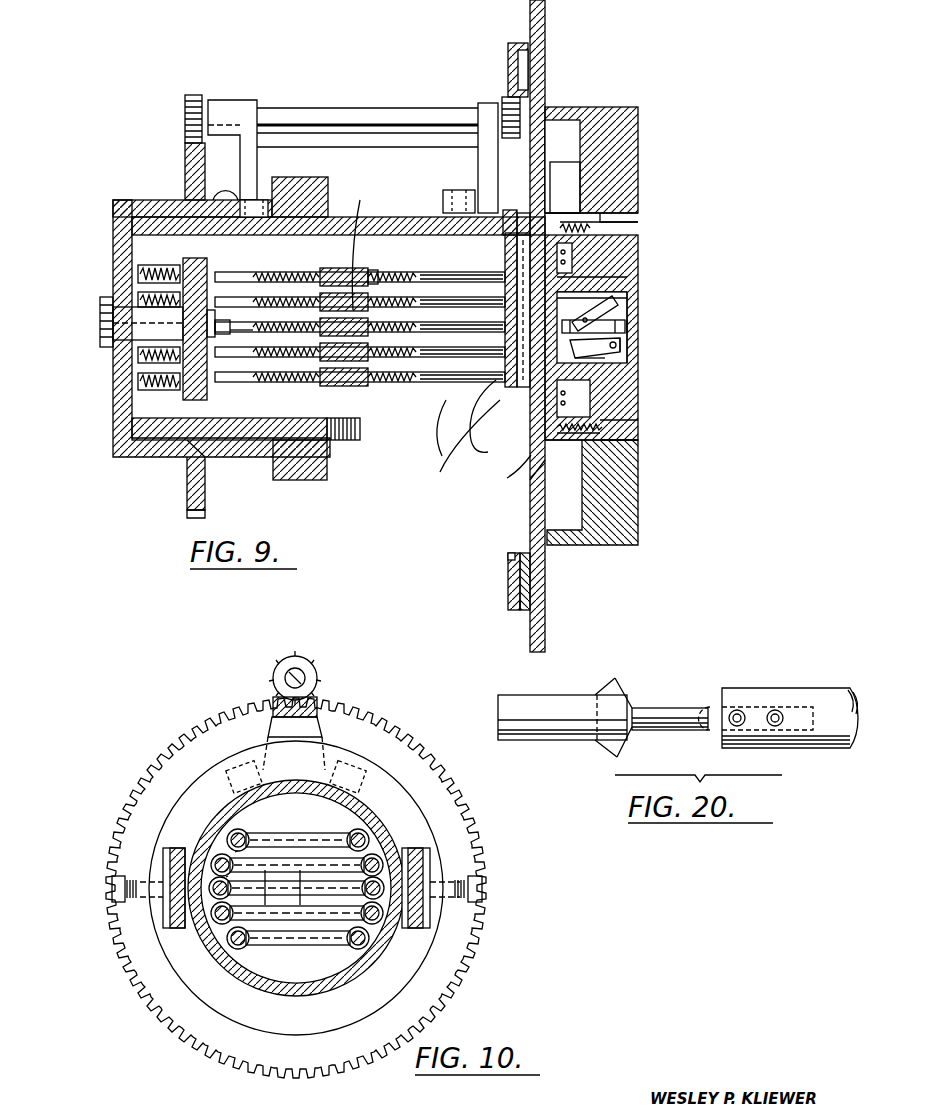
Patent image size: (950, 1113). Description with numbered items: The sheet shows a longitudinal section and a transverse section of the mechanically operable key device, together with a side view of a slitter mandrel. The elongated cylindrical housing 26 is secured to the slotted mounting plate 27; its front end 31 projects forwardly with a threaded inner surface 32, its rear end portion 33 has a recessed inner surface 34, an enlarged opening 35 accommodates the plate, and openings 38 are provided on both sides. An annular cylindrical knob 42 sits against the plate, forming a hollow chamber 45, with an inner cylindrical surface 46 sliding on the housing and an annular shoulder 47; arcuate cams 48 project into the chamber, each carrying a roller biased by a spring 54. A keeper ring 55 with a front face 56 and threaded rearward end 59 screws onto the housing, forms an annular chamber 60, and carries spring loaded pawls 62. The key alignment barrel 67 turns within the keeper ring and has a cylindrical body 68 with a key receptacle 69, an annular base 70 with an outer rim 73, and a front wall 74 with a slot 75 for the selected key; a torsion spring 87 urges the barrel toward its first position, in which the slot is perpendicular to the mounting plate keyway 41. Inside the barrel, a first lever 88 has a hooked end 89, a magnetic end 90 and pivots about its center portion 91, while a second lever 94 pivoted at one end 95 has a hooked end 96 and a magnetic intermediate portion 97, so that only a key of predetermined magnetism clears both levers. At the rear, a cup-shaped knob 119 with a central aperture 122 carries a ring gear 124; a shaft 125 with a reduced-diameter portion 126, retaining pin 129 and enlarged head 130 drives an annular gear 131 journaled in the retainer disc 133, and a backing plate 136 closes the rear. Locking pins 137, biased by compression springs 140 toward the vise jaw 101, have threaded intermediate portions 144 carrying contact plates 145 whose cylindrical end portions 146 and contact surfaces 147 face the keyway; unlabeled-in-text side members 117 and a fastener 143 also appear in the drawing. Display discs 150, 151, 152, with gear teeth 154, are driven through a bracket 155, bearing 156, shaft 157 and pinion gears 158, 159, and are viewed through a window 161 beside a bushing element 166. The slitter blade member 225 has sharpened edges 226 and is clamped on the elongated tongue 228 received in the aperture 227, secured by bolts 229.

In FIG. 9, the housing 26 is at (368, 244).
In FIG. 10, the housing 26 is at (268, 988).
In FIG. 9, the mounting plate 27 is at (546, 633).
In FIG. 9, the front end 31 is at (636, 218).
In FIG. 9, the threaded inner surface 32 is at (612, 237).
In FIG. 9, the rear end portion 33 is at (155, 200).
In FIG. 9, the recessed inner surface 34 is at (186, 449).
In FIG. 9, the enlarged opening 35 is at (378, 442).
In FIG. 9, the openings 38 is at (521, 240).
In FIG. 9, the mounting plate keyway 41 is at (508, 332).
In FIG. 9, the annular cylindrical knob 42 is at (640, 536).
In FIG. 9, the hollow chamber 45 is at (578, 521).
In FIG. 9, the inner cylindrical surface 46 is at (559, 446).
In FIG. 9, the annular shoulder 47 is at (602, 430).
In FIG. 9, the arcuate cams 48 is at (576, 184).
In FIG. 9, the spring 54 is at (551, 170).
In FIG. 9, the keeper ring 55 is at (645, 428).
In FIG. 9, the front face 56 is at (640, 420).
In FIG. 9, the threaded rearward end 59 is at (524, 479).
In FIG. 9, the annular chamber 60 is at (561, 230).
In FIG. 9, the spring loaded pawl 62 is at (630, 328).
In FIG. 9, the key alignment barrel 67 is at (645, 338).
In FIG. 9, the cylindrical body 68 is at (580, 299).
In FIG. 9, the key receptacle 69 is at (459, 445).
In FIG. 9, the annular base 70 is at (506, 472).
In FIG. 9, the outer rim 73 is at (542, 215).
In FIG. 9, the front wall 74 is at (628, 326).
In FIG. 9, the slot 75 is at (640, 340).
In FIG. 9, the torsion spring 87 is at (592, 436).
In FIG. 9, the first lever 88 is at (586, 290).
In FIG. 9, the hooked end 89 is at (522, 340).
In FIG. 9, the magnetic end 90 is at (606, 308).
In FIG. 9, the center portion 91 is at (600, 272).
In FIG. 9, the second lever 94 is at (606, 352).
In FIG. 9, the pivoted end 95 is at (612, 345).
In FIG. 9, the hooked end 96 is at (490, 423).
In FIG. 9, the magnetic intermediate portion 97 is at (618, 363).
In FIG. 9, the vise jaw 101 is at (455, 434).
In FIG. 10, the clamp block 117 is at (176, 912).
In FIG. 9, the cup-shaped knob 119 is at (112, 459).
In FIG. 9, the central aperture 122 is at (150, 340).
In FIG. 9, the ring gear 124 is at (186, 152).
In FIG. 10, the ring gear 124 is at (233, 731).
In FIG. 9, the shaft 125 is at (183, 322).
In FIG. 9, the reduced-diameter portion 126 is at (258, 334).
In FIG. 9, the retaining pin 129 is at (243, 336).
In FIG. 9, the enlarged head 130 is at (100, 302).
In FIG. 9, the annular gear 131 is at (205, 455).
In FIG. 9, the retainer disc 133 is at (236, 214).
In FIG. 9, the backing plate 136 is at (140, 268).
In FIG. 9, the locking pins 137 is at (386, 322).
In FIG. 10, the locking pins 137 is at (232, 846).
In FIG. 9, the compression springs 140 is at (140, 292).
In FIG. 9, the bolt 143 is at (500, 213).
In FIG. 9, the intermediate portions 144 is at (340, 372).
In FIG. 9, the contact plate 145 is at (366, 372).
In FIG. 10, the contact plate 145 is at (268, 867).
In FIG. 9, the cylindrical end portions 146 is at (349, 310).
In FIG. 10, the cylindrical end portions 146 is at (373, 862).
In FIG. 9, the contact surface 147 is at (436, 402).
In FIG. 10, the contact surface 147 is at (318, 905).
In FIG. 9, the display disc 150 is at (508, 579).
In FIG. 9, the display disc 151 is at (519, 607).
In FIG. 9, the display disc 152 is at (523, 612).
In FIG. 9, the gear teeth 154 is at (509, 556).
In FIG. 9, the bracket 155 is at (257, 160).
In FIG. 10, the bracket 155 is at (318, 722).
In FIG. 9, the bearing 156 is at (223, 100).
In FIG. 9, the shaft 157 is at (338, 108).
In FIG. 9, the pinion gear 158 is at (192, 94).
In FIG. 10, the pinion gear 158 is at (316, 672).
In FIG. 9, the pinion gear 159 is at (504, 99).
In FIG. 9, the window 161 is at (530, 56).
In FIG. 9, the bushing 166 is at (530, 70).
In FIG. 20, the slitter blade member 225 is at (615, 678).
In FIG. 20, the sharpened edges 226 is at (617, 757).
In FIG. 20, the aperture 227 is at (710, 700).
In FIG. 20, the elongated tongue 228 is at (680, 708).
In FIG. 20, the bolts 229 is at (737, 726).